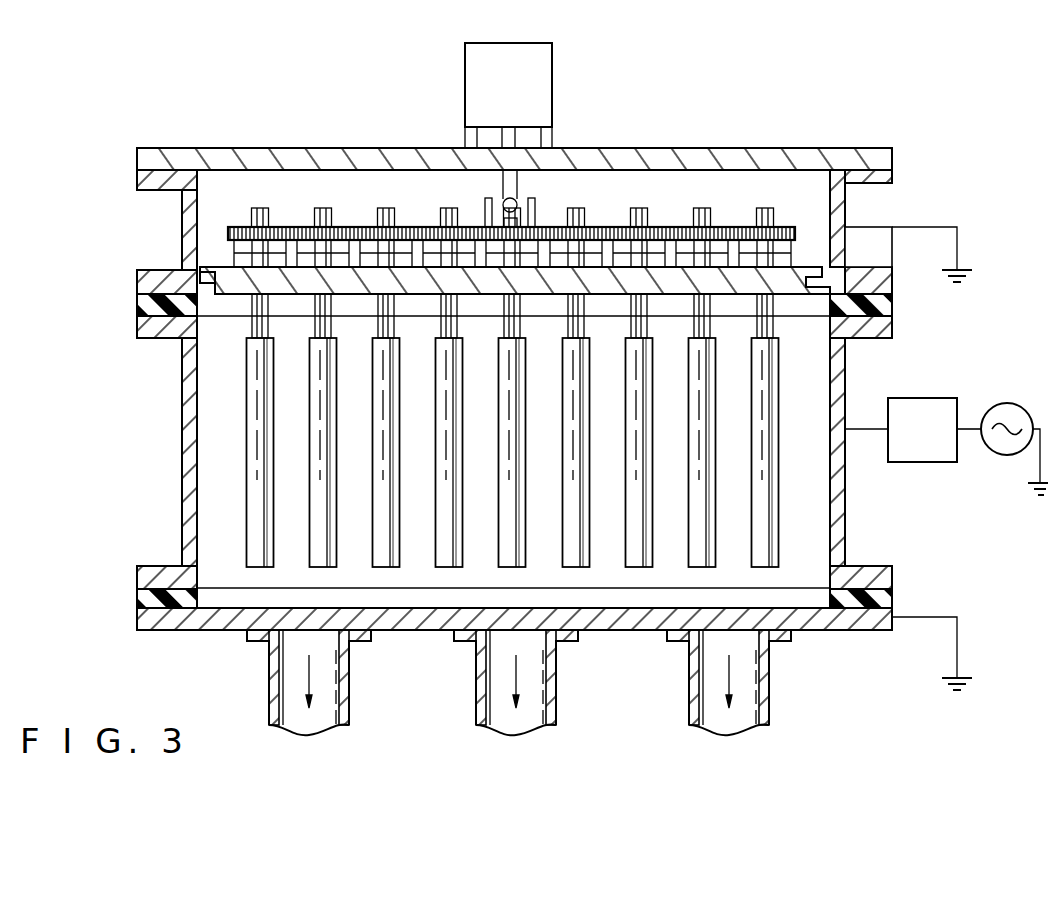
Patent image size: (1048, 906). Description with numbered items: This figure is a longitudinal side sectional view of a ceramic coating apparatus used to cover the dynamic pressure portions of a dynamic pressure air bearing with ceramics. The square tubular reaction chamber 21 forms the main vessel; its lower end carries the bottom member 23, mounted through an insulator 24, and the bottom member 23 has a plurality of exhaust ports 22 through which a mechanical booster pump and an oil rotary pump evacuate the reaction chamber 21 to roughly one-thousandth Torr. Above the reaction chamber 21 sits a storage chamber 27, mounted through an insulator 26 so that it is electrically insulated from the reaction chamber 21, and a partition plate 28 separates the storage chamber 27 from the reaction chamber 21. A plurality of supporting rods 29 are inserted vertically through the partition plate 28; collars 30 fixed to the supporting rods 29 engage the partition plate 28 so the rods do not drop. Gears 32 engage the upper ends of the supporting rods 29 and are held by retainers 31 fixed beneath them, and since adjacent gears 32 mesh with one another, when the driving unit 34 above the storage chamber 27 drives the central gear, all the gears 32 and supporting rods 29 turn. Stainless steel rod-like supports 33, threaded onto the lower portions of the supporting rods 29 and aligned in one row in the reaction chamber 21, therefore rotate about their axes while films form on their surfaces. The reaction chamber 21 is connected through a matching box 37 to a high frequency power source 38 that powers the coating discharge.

The reaction chamber 21 is at (182, 487).
The exhaust ports 22 is at (349, 678).
The bottom member 23 is at (232, 621).
The insulator 24 is at (159, 603).
The insulator 26 is at (893, 307).
The storage chamber 27 is at (182, 233).
The partition plate 28 is at (198, 278).
The supporting rods 29 is at (322, 209).
The collars 30 is at (782, 257).
The retainers 31 is at (792, 246).
The gears 32 is at (656, 227).
The rod-like supports 33 is at (274, 456).
The driving unit 34 is at (553, 86).
The matching box 37 is at (918, 400).
The high frequency power source 38 is at (1008, 403).